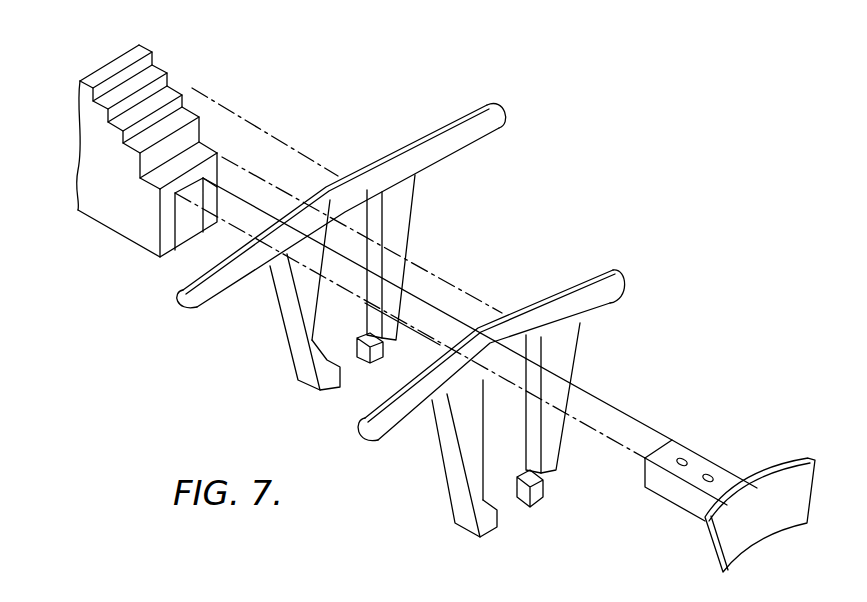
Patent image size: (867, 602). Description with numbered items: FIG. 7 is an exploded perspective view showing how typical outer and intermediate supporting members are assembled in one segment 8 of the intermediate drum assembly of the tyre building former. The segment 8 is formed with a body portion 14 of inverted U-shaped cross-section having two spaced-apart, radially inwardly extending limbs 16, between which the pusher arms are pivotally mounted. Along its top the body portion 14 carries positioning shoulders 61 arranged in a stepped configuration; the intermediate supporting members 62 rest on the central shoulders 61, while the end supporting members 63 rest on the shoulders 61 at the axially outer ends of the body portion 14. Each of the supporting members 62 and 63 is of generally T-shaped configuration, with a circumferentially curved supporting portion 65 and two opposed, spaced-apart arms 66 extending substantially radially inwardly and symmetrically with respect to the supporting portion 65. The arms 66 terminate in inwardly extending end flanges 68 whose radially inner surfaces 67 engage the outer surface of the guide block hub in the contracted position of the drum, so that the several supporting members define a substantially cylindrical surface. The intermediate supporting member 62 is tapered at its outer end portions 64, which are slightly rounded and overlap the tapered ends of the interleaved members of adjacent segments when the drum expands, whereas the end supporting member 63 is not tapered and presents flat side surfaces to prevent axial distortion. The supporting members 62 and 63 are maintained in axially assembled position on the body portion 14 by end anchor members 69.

The segment 8 is at (78, 150).
The body portion 14 is at (106, 73).
The limbs 16 is at (103, 220).
The positioning shoulders 61 is at (176, 64).
The intermediate supporting member 62 is at (446, 150).
The end supporting member 63 is at (620, 298).
The outer end portions 64 is at (504, 117).
The supporting portions 65 is at (396, 152).
The arms 66 is at (402, 270).
The radially inner surfaces 67 is at (333, 387).
The end flanges 68 is at (362, 346).
The end anchor members 69 is at (728, 483).